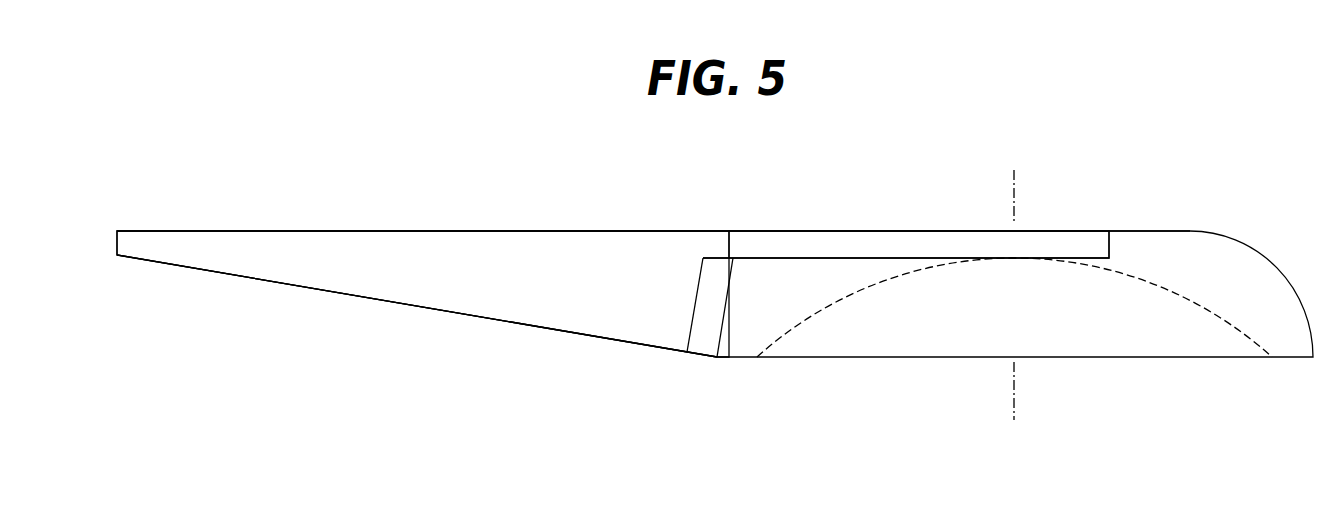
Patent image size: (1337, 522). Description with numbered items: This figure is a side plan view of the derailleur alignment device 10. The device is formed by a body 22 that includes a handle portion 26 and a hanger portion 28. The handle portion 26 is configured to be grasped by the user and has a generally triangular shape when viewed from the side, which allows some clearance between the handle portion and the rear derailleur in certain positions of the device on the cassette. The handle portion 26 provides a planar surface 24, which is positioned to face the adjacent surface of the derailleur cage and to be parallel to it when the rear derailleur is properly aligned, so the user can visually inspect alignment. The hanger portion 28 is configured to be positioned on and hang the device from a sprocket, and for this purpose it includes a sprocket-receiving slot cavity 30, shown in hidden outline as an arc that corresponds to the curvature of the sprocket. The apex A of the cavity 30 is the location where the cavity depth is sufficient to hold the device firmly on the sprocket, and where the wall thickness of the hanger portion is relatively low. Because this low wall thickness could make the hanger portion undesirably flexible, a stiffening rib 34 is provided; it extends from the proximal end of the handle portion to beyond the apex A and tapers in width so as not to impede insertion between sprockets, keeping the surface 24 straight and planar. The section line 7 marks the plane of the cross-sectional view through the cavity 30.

The airfoil / blade 10 is at (1148, 159).
The body 22 is at (336, 268).
The planar surface 24 is at (545, 292).
The handle portion 26 is at (384, 218).
The hanger portion 28 is at (797, 220).
The sprocket-receiving slot cavity 30 is at (901, 324).
The stiffening rib 34 is at (880, 248).
The apex A is at (1013, 258).
The section line 7- 7 is at (1017, 180).